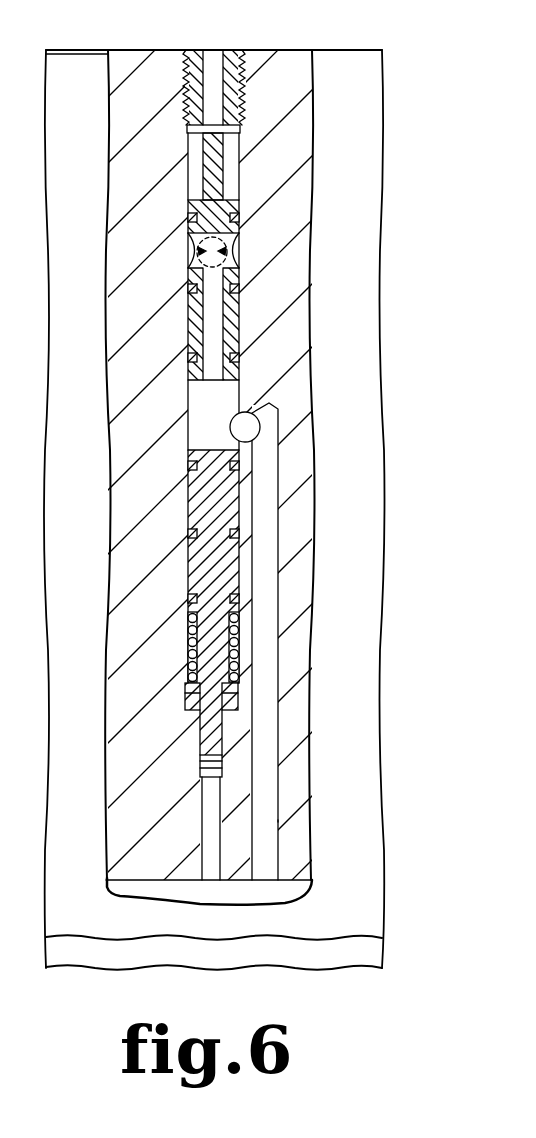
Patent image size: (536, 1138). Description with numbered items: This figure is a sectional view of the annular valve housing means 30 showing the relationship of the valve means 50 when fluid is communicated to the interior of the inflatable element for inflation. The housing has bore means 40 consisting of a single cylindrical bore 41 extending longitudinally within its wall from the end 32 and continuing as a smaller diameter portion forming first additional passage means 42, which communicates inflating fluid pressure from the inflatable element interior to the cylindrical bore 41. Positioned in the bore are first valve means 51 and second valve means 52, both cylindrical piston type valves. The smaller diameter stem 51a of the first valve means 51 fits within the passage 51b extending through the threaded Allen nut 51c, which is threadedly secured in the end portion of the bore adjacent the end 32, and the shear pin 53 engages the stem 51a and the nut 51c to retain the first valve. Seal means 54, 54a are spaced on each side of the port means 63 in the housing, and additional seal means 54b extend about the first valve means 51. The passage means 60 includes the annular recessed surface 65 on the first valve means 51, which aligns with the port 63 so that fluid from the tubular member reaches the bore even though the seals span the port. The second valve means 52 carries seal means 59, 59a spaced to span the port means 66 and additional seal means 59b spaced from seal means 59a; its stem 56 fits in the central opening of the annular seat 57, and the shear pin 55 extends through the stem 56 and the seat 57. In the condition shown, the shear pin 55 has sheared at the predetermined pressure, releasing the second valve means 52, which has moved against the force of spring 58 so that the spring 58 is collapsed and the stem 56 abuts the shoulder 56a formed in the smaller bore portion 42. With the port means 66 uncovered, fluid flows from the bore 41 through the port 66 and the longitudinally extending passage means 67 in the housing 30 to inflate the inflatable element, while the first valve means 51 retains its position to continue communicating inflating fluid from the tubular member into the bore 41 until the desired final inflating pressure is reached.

The annular valve housing means 30 is at (281, 70).
The end of the annular housing 32 is at (143, 50).
The bore means 40 is at (228, 423).
The cylindrical bore 41 is at (233, 159).
The first additional passage means 42 is at (203, 830).
The valve means 50 is at (185, 323).
The first valve means 51 is at (237, 324).
The stem 51a is at (224, 177).
The passage 51b is at (185, 100).
The threaded Allen nut 51c is at (186, 86).
The second valve means 52 is at (187, 573).
The shear pin 53 is at (241, 128).
The seal means 54 is at (187, 218).
The seal means 54a is at (187, 289).
The additional seal means 54b is at (187, 358).
The shear pin 55 is at (240, 693).
The stem 56 is at (199, 736).
The shoulder 56a is at (199, 785).
The annular seat 57 is at (184, 693).
The spring 58 is at (187, 651).
The seal means 59 is at (187, 466).
The seal means 59a is at (187, 534).
The additional seal means 59b is at (187, 599).
The passage means 60 is at (384, 254).
The port means 63 is at (386, 254).
The annular recessed surface 65 is at (240, 240).
The port means 66 is at (232, 429).
The longitudinally extending passage means 67 is at (268, 802).